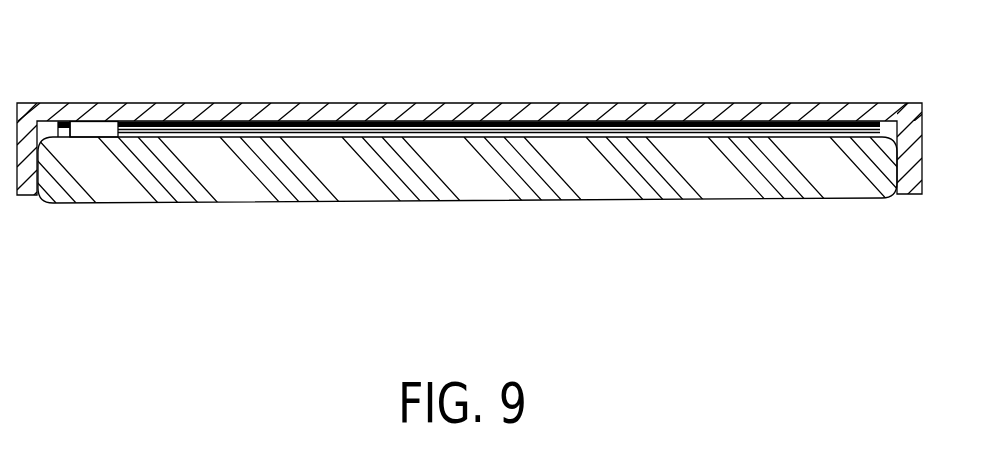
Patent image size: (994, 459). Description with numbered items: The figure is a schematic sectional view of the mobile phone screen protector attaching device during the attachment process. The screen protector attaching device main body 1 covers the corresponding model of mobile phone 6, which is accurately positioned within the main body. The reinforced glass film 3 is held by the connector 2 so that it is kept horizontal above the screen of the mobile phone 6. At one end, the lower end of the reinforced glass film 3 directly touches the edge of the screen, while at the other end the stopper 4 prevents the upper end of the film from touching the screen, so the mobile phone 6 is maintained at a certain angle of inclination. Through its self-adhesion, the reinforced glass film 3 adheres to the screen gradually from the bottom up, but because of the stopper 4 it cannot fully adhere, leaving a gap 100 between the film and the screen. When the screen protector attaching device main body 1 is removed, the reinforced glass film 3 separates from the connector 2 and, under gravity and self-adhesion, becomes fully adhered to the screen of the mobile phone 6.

The screen protector attaching device main body 1 is at (913, 110).
The connector 2 is at (483, 120).
The reinforced glass film 3 is at (202, 132).
The stopper 4 is at (102, 130).
The mobile phone 6 is at (236, 197).
The gap 100 is at (63, 133).